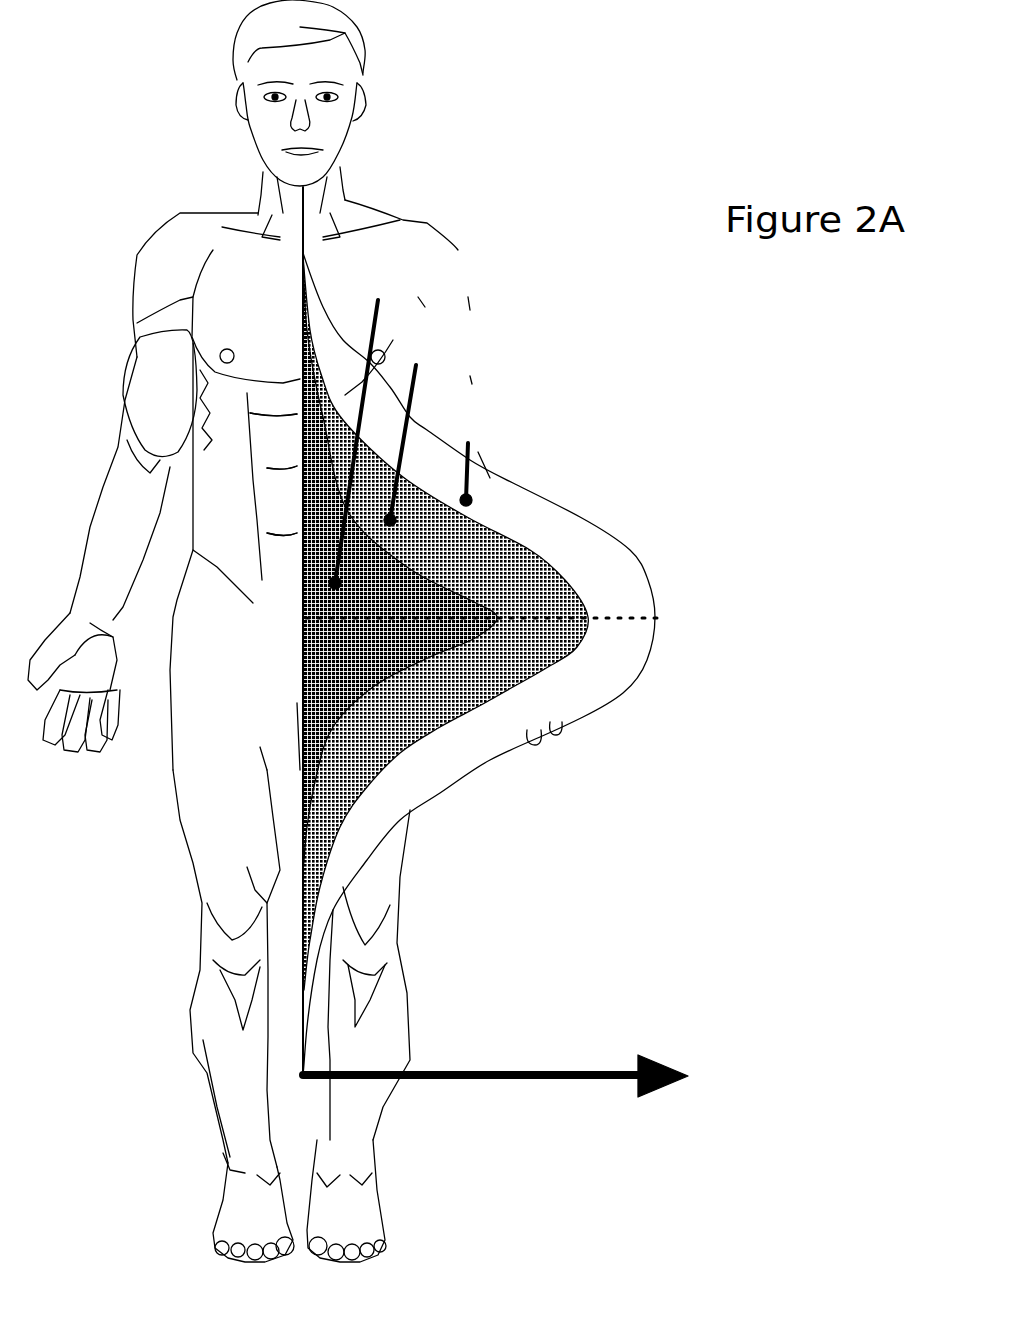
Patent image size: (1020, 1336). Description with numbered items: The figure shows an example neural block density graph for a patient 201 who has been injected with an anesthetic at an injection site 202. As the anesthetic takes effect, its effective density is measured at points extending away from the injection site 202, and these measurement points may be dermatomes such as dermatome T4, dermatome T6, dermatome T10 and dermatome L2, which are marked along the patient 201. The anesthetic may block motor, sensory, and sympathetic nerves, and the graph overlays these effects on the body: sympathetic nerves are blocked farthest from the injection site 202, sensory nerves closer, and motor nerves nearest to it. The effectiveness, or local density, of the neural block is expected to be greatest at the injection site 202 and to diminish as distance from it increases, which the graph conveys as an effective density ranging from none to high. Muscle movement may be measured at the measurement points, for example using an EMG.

The patient 201 is at (147, 852).
The injection site 202 is at (303, 623).
The dermatome T4 is at (273, 384).
The dermatome T6 is at (279, 450).
The dermatome T10 is at (278, 564).
The dermatome L2 is at (281, 736).